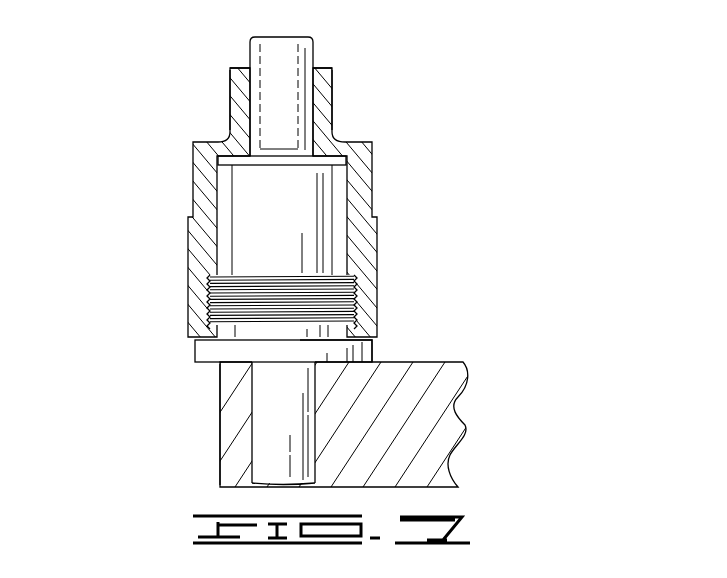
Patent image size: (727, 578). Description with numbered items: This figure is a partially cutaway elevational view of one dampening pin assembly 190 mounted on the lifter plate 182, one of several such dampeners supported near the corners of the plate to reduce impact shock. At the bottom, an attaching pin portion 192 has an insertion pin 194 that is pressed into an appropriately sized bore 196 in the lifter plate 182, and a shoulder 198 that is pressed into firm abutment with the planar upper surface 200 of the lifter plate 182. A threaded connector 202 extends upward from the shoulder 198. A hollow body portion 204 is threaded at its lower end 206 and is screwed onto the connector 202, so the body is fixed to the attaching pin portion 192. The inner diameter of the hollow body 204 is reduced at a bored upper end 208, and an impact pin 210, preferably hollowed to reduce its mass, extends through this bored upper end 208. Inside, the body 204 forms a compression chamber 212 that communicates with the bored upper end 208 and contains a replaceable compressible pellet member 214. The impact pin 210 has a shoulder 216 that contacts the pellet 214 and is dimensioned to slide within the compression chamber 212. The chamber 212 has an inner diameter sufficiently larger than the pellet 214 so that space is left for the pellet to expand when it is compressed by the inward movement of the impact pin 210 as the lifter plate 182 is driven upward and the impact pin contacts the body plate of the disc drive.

The dampening pin assembly 190 is at (305, 184).
The impact pin 210 is at (249, 54).
The bored upper end 208 is at (230, 96).
The hollow body portion 204 is at (377, 228).
The shoulder 216 is at (334, 153).
The compression chamber 212 is at (222, 195).
The replaceable compressible pellet member 214 is at (323, 198).
The lower end 206 is at (206, 284).
The threaded connector 202 is at (358, 284).
The attaching pin portion 192 is at (195, 351).
The shoulder 198 is at (372, 348).
The planar upper surface 200 is at (455, 392).
The lifter plate 182 is at (220, 394).
The insertion pin 194 is at (262, 434).
The bore 196 is at (252, 460).